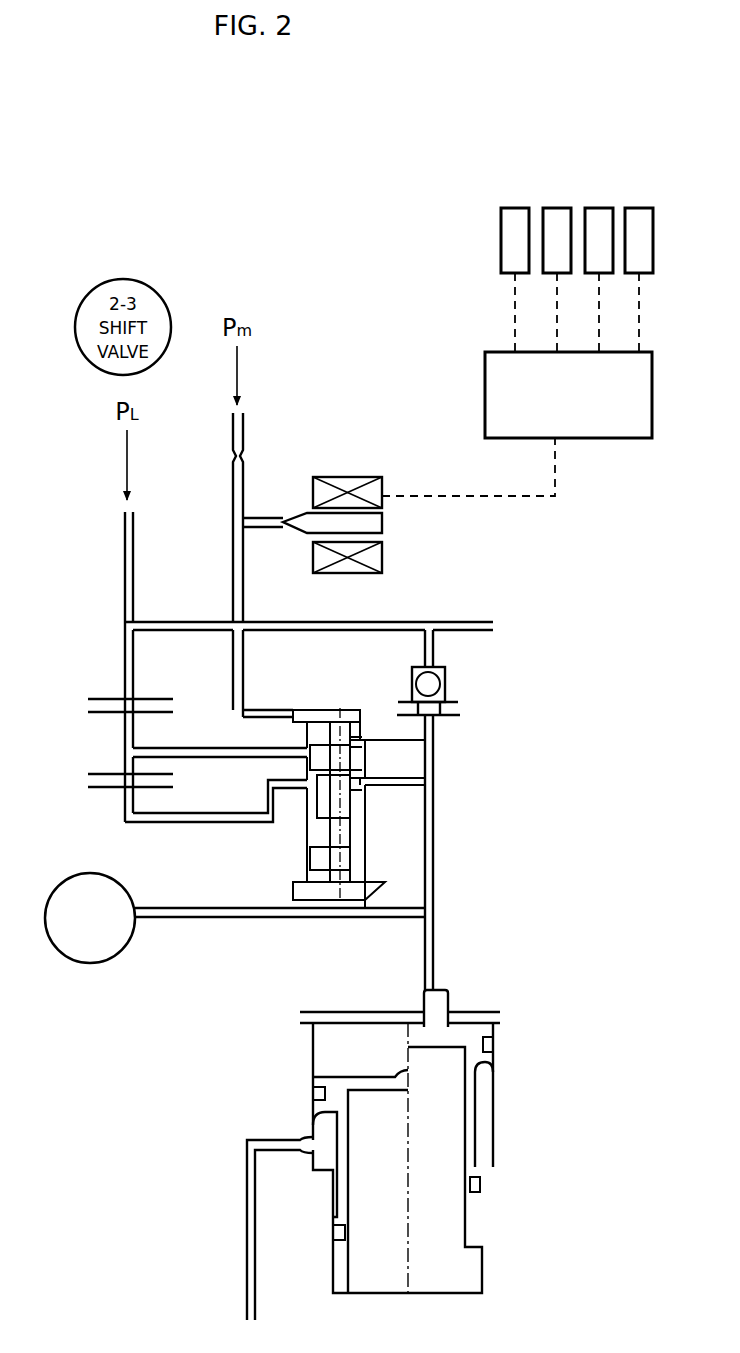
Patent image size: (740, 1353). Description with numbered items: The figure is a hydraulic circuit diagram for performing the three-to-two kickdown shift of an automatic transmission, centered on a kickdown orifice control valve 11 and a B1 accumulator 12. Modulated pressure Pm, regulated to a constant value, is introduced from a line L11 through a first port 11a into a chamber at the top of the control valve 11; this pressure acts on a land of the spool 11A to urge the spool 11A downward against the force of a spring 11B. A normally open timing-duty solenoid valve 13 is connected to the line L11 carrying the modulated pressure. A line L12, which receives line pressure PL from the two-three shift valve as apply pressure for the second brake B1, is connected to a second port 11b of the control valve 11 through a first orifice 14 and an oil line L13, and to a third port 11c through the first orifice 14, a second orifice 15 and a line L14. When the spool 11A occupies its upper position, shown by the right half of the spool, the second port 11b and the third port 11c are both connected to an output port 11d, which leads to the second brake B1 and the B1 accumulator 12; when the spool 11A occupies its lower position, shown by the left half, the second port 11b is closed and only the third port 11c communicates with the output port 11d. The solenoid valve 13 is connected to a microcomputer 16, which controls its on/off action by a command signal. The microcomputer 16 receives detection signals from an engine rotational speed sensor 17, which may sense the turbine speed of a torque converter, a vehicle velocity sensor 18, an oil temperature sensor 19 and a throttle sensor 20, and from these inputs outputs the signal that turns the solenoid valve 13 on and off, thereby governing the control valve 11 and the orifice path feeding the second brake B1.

The 3-2 kickdown orifice control valve 11 is at (362, 826).
The first port 11a is at (305, 708).
The second port 11b is at (295, 745).
The third port 11c is at (300, 790).
The output port 11d is at (356, 790).
The spool 11A is at (352, 734).
The spring 11B is at (352, 862).
The B1 accumulator 12 is at (500, 1090).
The timing-duty solenoid valve 13 is at (378, 473).
The first orifice 14 is at (120, 713).
The second orifice 15 is at (120, 788).
The microcomputer 16 is at (605, 444).
The engine rotational speed sensor 17 is at (497, 207).
The vehicle velocity sensor 18 is at (551, 206).
The oil temperature sensor 19 is at (612, 206).
The throttle sensor 20 is at (652, 206).
The line L11 is at (233, 562).
The line L12 is at (125, 582).
The oil line L13 is at (205, 747).
The line L14 is at (202, 822).
The second brake B1 is at (235, 918).